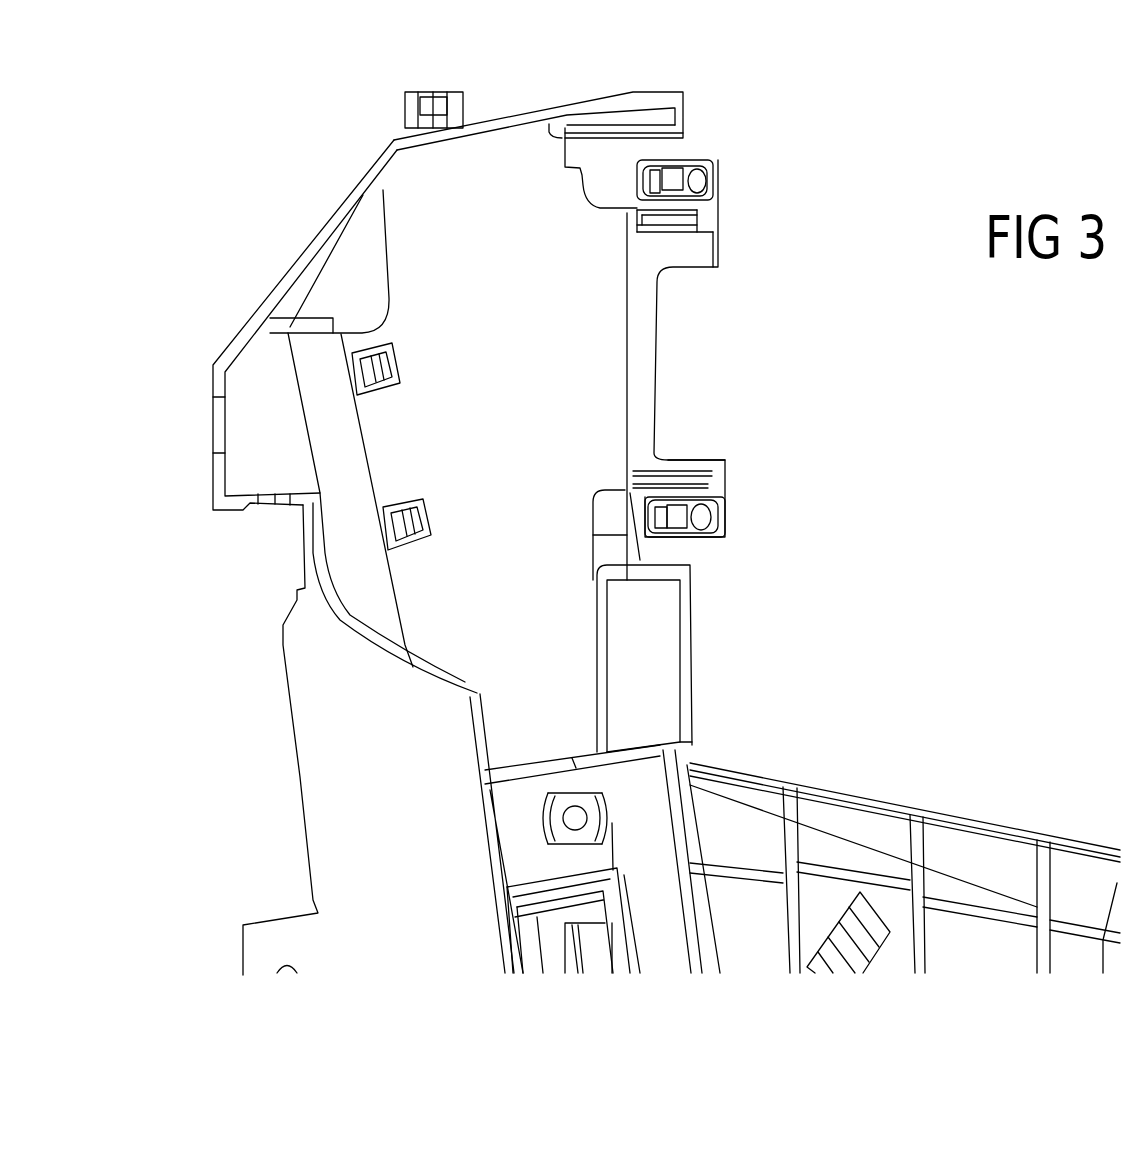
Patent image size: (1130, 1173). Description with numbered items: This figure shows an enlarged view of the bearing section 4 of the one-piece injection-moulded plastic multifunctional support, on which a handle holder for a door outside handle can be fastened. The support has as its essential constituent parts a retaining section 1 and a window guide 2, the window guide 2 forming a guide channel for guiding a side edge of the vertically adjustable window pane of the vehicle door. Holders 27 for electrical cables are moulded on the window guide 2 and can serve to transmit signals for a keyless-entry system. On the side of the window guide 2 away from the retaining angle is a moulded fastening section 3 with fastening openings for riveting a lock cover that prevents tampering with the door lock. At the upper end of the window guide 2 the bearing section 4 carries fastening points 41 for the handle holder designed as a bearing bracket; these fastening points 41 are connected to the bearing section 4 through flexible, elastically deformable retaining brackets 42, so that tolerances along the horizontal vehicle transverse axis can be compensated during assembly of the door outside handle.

The retaining section 1 is at (972, 813).
The window guide 2 is at (643, 827).
The fastening section 3 is at (300, 808).
The bearing section 4 is at (588, 243).
The holder for electrical cables 27 is at (413, 103).
The fastening points 41 is at (713, 175).
The retaining brackets 42 is at (712, 208).